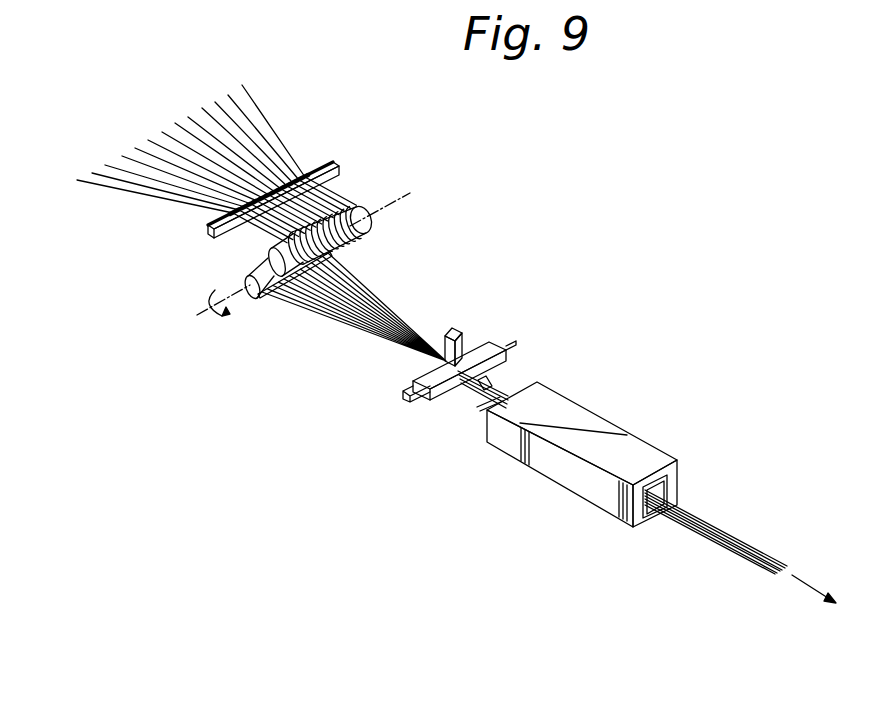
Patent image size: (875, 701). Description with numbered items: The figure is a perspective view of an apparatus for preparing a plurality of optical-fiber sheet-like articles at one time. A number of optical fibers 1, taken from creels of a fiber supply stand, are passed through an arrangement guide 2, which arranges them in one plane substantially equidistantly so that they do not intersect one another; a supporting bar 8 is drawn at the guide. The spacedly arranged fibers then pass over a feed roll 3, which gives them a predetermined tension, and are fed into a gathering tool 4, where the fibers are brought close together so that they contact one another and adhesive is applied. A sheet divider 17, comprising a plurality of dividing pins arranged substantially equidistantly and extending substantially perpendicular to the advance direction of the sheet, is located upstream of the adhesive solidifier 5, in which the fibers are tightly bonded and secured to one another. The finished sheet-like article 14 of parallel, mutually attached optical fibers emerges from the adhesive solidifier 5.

The optical fibers 1 is at (273, 138).
The arrangement guide 2 is at (298, 170).
The feed roll 3 is at (372, 222).
The gathering tool 4 is at (490, 343).
The adhesive solidifier 5 is at (617, 425).
The comb bar 8 is at (340, 171).
The sheet-like article 14 is at (698, 532).
The sheet divider 17 is at (500, 382).